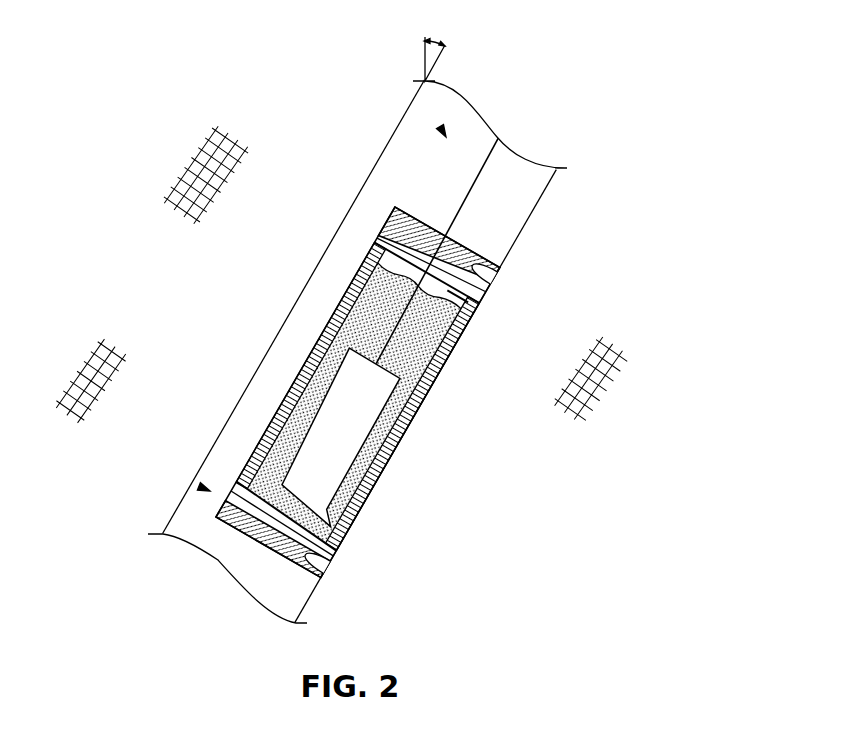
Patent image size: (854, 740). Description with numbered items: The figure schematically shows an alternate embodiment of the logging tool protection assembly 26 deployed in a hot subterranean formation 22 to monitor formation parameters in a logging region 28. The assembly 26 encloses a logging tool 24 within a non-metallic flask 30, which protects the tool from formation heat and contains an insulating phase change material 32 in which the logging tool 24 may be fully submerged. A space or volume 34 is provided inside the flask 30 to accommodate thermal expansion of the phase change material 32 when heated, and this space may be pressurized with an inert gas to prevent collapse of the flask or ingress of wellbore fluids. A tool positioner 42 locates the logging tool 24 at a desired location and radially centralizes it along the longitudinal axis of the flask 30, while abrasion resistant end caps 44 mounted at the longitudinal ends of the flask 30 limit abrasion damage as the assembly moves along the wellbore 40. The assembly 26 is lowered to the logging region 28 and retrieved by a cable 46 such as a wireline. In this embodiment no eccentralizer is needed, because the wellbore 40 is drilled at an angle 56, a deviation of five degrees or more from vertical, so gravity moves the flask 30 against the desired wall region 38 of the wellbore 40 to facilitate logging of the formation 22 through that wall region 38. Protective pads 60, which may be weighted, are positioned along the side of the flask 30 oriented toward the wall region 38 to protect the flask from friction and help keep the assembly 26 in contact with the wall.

The subterranean formation 22 is at (145, 315).
The logging tool 24 is at (325, 433).
The logging tool protection assembly 26 is at (200, 487).
The logging region 28 is at (490, 437).
The flask 30 is at (326, 337).
The phase change material 32 is at (281, 447).
The space or volume 34 is at (467, 305).
The wall region 38 is at (538, 197).
The wellbore 40 is at (445, 135).
The tool positioner 42 is at (357, 527).
The end caps 44 is at (486, 263).
The cable 46 is at (453, 213).
The angle 56 is at (438, 41).
The protective pads 60 is at (485, 273).